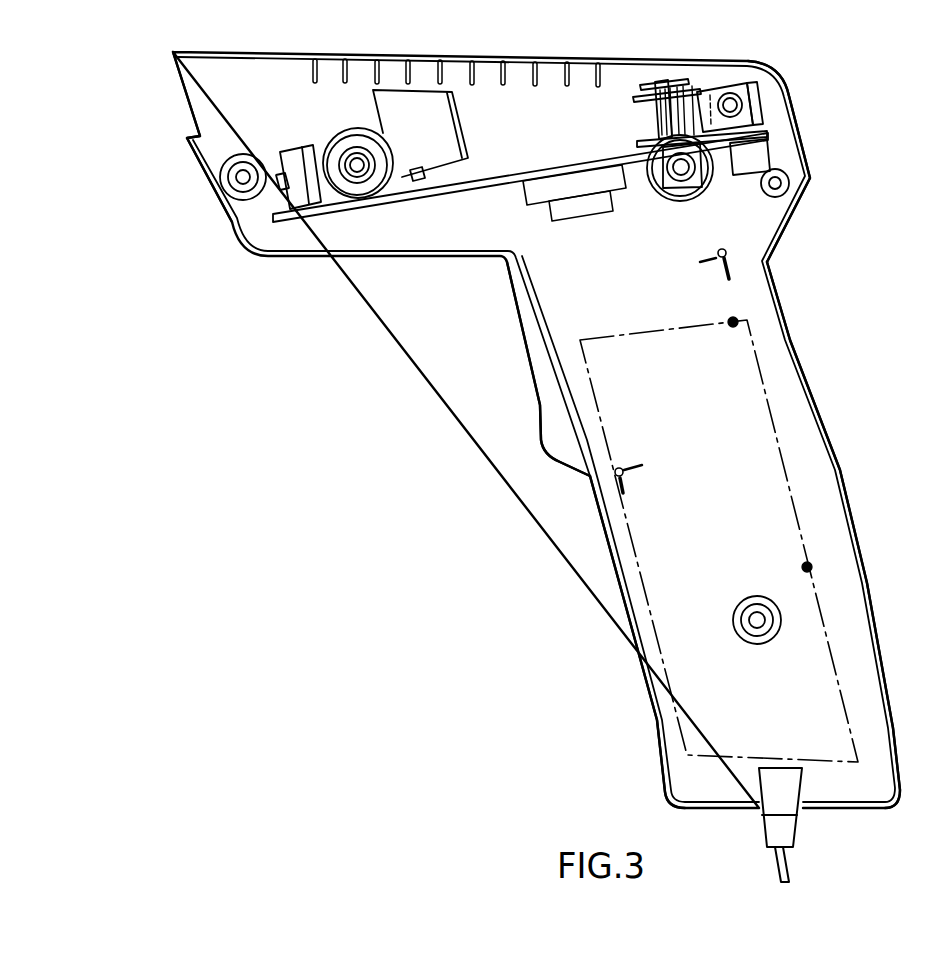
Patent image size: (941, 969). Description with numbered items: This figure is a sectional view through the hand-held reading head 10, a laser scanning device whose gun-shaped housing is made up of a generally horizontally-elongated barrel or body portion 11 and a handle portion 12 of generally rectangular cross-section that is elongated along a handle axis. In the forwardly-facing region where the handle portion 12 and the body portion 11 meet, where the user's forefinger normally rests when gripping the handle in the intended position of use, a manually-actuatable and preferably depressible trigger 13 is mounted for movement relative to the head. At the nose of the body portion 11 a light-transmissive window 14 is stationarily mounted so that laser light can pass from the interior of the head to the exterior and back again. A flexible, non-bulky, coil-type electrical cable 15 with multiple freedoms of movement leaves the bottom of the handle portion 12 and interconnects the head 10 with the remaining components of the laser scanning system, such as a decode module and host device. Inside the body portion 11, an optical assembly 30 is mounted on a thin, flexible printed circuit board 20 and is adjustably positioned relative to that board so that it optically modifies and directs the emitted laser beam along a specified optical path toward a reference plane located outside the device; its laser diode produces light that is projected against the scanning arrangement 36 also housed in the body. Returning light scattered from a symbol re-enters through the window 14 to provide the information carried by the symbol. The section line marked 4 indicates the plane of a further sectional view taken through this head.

The hand-held reading head 10 is at (581, 48).
The body portion 11 is at (797, 125).
The handle portion 12 is at (841, 472).
The trigger 13 is at (538, 406).
The window 14 is at (187, 104).
The coil-type electrical cable 15 is at (787, 863).
The printed circuit board 20 is at (378, 206).
The optical assembly 30 is at (388, 131).
The scanning arrangement 36 is at (703, 71).
The section line 4- 4 is at (590, 85).